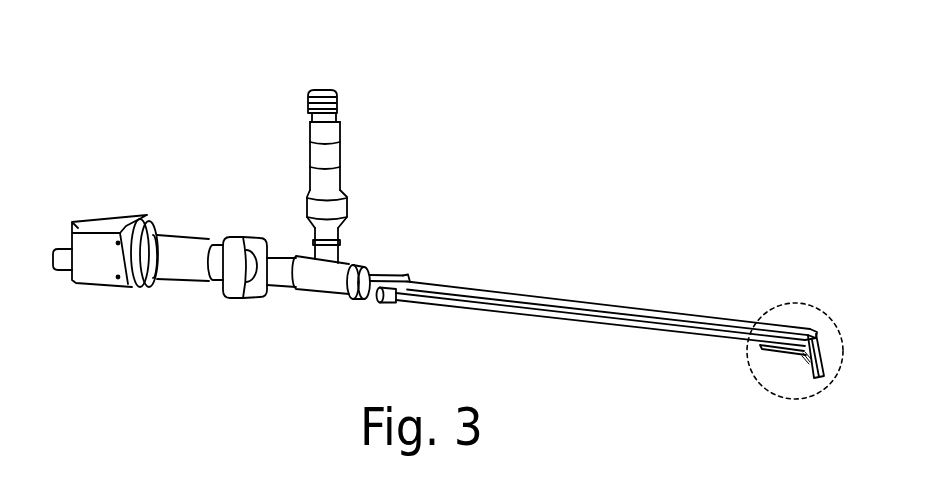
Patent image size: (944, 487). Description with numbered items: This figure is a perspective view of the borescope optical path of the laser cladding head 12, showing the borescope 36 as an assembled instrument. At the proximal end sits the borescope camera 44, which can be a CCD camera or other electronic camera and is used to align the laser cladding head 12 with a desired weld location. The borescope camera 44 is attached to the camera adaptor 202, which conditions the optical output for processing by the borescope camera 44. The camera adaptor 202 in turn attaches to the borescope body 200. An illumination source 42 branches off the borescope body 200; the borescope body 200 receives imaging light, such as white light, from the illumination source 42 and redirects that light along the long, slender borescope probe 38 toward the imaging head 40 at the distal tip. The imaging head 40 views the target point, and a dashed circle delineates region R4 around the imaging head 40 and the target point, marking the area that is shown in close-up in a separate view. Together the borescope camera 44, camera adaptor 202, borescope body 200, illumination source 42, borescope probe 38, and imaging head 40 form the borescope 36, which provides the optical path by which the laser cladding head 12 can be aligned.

The laser cladding head 12 is at (553, 117).
The borescope camera 44 is at (92, 213).
The camera adaptor 202 is at (188, 228).
The borescope body 200 is at (330, 298).
The illumination source 42 is at (340, 145).
The borescope 36 is at (402, 253).
The borescope probe 38 is at (592, 305).
The imaging head 40 is at (790, 327).
The region R4 is at (777, 396).